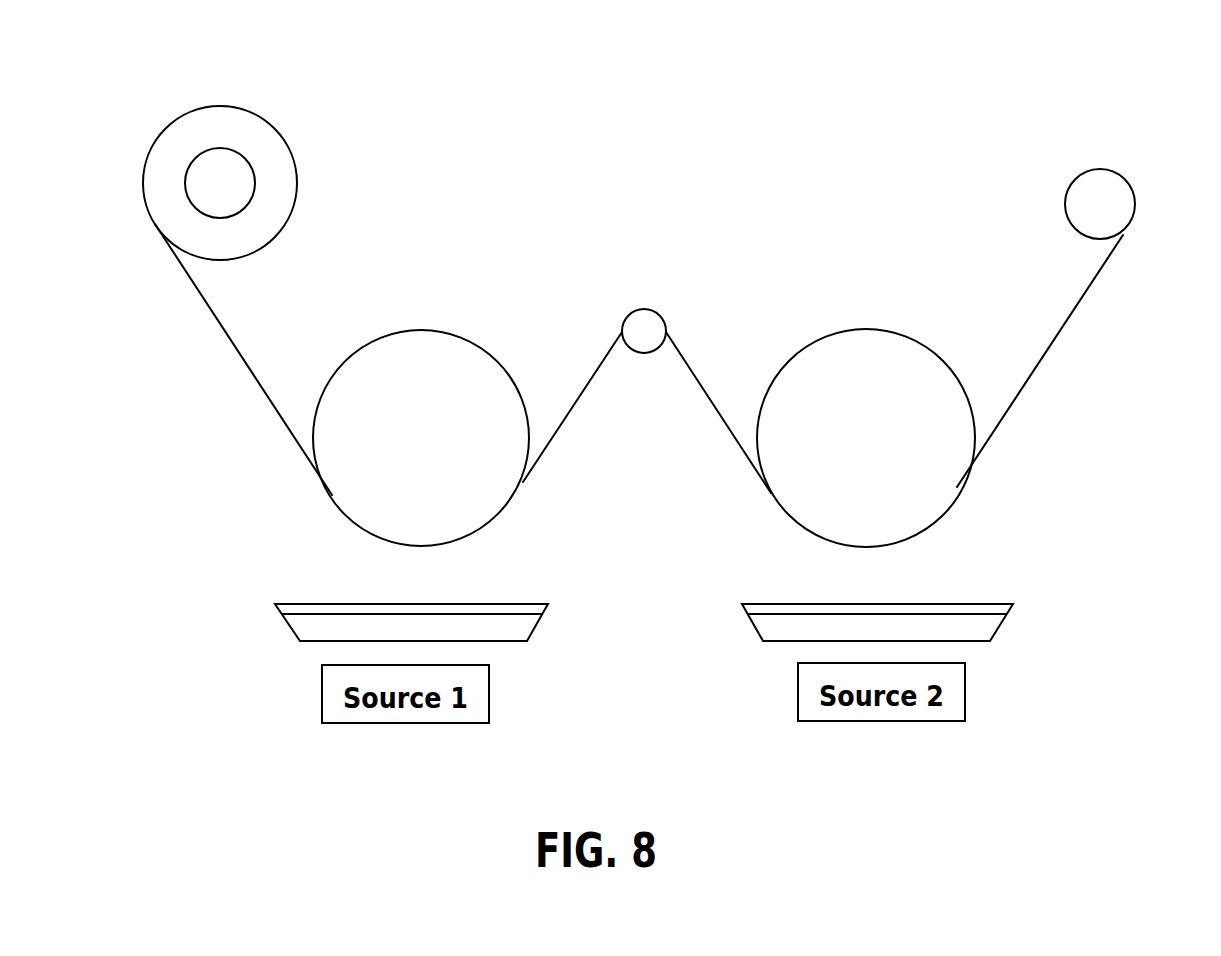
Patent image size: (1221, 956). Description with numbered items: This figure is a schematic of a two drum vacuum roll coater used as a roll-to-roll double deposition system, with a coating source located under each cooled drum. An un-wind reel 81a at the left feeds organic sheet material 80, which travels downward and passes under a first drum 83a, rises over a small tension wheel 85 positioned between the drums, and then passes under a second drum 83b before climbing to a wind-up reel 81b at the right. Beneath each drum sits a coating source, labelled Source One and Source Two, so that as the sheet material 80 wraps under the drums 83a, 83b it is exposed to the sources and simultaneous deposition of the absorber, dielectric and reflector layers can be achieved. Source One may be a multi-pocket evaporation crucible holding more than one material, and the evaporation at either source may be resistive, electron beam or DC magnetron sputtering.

The organic sheet material 80 is at (237, 350).
The un-wind reel 81a is at (218, 123).
The wind-up reel 81b is at (1123, 178).
The drum 83a is at (462, 338).
The drum 83b is at (902, 338).
The tension wheel 85 is at (642, 322).